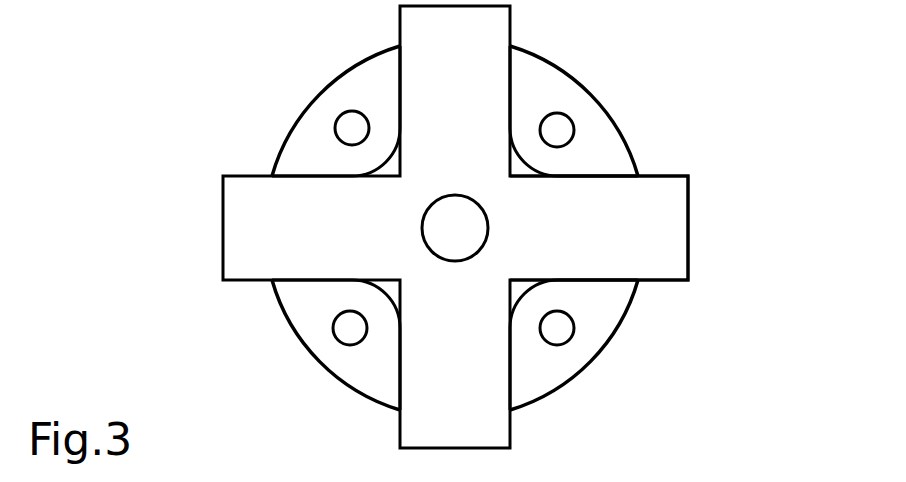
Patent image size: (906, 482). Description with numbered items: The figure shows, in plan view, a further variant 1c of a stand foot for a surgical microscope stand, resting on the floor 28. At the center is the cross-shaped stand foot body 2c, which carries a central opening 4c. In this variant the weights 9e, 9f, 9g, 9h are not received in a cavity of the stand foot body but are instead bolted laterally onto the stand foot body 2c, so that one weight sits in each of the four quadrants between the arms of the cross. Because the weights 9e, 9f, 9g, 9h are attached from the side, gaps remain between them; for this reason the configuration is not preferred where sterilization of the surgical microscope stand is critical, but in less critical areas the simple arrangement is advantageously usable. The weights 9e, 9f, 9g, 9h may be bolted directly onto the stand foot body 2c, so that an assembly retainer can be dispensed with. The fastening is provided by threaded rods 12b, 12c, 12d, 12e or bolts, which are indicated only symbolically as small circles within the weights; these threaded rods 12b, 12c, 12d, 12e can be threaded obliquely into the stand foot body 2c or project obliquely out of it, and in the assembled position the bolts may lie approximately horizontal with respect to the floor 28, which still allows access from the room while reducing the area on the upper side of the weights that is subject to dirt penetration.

The variant 1c is at (690, 101).
The stand foot body 2c is at (673, 232).
The central opening 4c is at (452, 228).
The weight 9e is at (300, 137).
The weight 9f is at (615, 152).
The weight 9g is at (610, 332).
The weight 9h is at (360, 370).
The threaded rod 12b is at (351, 128).
The threaded rod 12c is at (557, 130).
The threaded rod 12d is at (557, 328).
The threaded rod 12e is at (350, 328).
The floor 28 is at (166, 268).